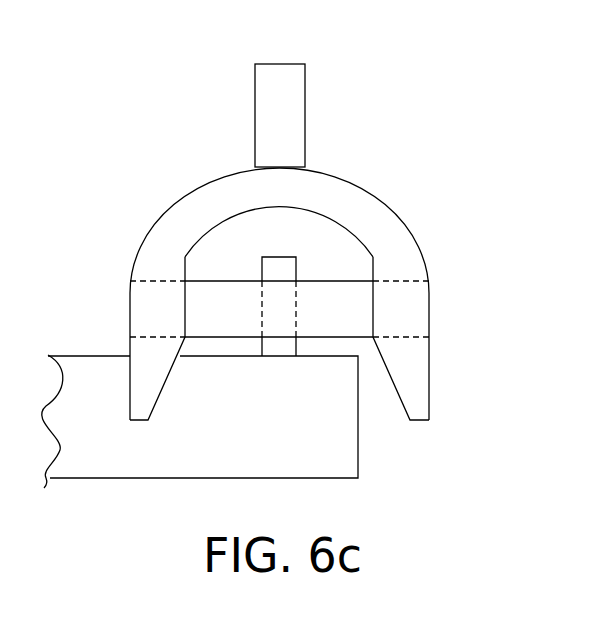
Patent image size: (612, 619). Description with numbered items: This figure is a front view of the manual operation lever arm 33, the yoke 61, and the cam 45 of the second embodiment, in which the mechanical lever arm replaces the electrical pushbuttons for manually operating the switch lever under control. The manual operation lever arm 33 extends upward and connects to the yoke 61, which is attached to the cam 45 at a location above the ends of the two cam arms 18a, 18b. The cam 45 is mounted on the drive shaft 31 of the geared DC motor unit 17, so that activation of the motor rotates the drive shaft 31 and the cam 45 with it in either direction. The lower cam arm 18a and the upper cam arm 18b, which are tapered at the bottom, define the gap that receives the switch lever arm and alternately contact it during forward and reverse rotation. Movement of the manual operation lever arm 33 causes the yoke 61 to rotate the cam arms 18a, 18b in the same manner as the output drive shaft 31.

The manual operation lever arm 33 is at (305, 88).
The yoke 61 is at (372, 193).
The drive shaft 31 is at (283, 257).
The cam 45 is at (343, 312).
The geared DC motor unit 17 is at (87, 367).
The lower cam arm 18a is at (162, 395).
The upper cam arm 18b is at (390, 385).